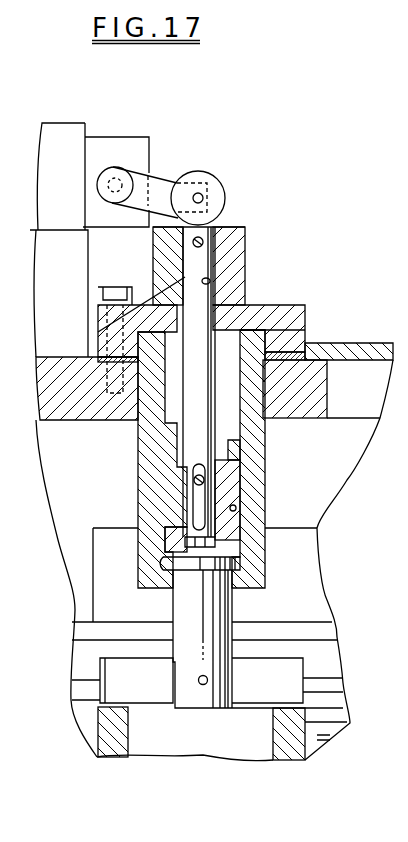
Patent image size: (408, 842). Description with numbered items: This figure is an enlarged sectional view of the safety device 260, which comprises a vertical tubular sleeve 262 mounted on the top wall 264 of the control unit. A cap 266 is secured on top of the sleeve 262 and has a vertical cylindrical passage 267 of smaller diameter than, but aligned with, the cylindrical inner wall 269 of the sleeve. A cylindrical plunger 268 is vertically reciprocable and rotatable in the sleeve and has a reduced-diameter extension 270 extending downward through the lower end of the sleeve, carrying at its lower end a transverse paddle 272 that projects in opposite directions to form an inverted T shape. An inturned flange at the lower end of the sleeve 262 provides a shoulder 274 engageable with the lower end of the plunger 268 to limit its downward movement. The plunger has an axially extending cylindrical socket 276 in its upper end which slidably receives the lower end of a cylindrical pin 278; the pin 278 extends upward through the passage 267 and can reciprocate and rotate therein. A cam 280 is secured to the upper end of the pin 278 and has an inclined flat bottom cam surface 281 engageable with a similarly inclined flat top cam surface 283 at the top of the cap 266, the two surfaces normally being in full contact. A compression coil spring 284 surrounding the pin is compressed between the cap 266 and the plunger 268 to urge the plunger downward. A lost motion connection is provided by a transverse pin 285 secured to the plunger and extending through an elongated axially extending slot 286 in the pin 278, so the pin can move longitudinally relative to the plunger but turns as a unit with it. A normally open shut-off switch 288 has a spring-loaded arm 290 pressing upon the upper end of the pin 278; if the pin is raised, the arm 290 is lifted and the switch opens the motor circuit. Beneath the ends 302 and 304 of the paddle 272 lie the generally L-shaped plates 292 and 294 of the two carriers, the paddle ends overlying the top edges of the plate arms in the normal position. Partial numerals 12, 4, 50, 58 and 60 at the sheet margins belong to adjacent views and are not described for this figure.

The shut-off switch 288 is at (63, 133).
The spring-loaded arm 290 is at (210, 186).
The safety device 260 is at (88, 307).
The top wall 264 is at (63, 362).
The sleeve 262 is at (266, 446).
The cam 280 is at (160, 244).
The top cam surface 283 is at (170, 280).
The bottom cam surface 281 is at (228, 252).
The cap 266 is at (285, 304).
The compression coil spring 284 is at (222, 393).
The socket 276 is at (216, 483).
The pin 278 is at (214, 232).
The passage 267 is at (210, 282).
The transverse pin 285 is at (194, 479).
The slot 286 is at (193, 500).
The inner wall 269 is at (237, 508).
The plunger 268 is at (230, 536).
The extension 270 is at (213, 610).
The end of paddle 302 is at (115, 693).
The paddle 272 is at (290, 691).
The end of paddle 304 is at (298, 688).
The L-shaped plate 292 is at (108, 758).
The L-shaped plate 294 is at (292, 752).
The shoulder 274 is at (160, 560).
The housing 12 is at (395, 95).
The frame 4 is at (401, 204).
The member 50 is at (407, 773).
The member 58 is at (407, 808).
The member 60 is at (407, 838).